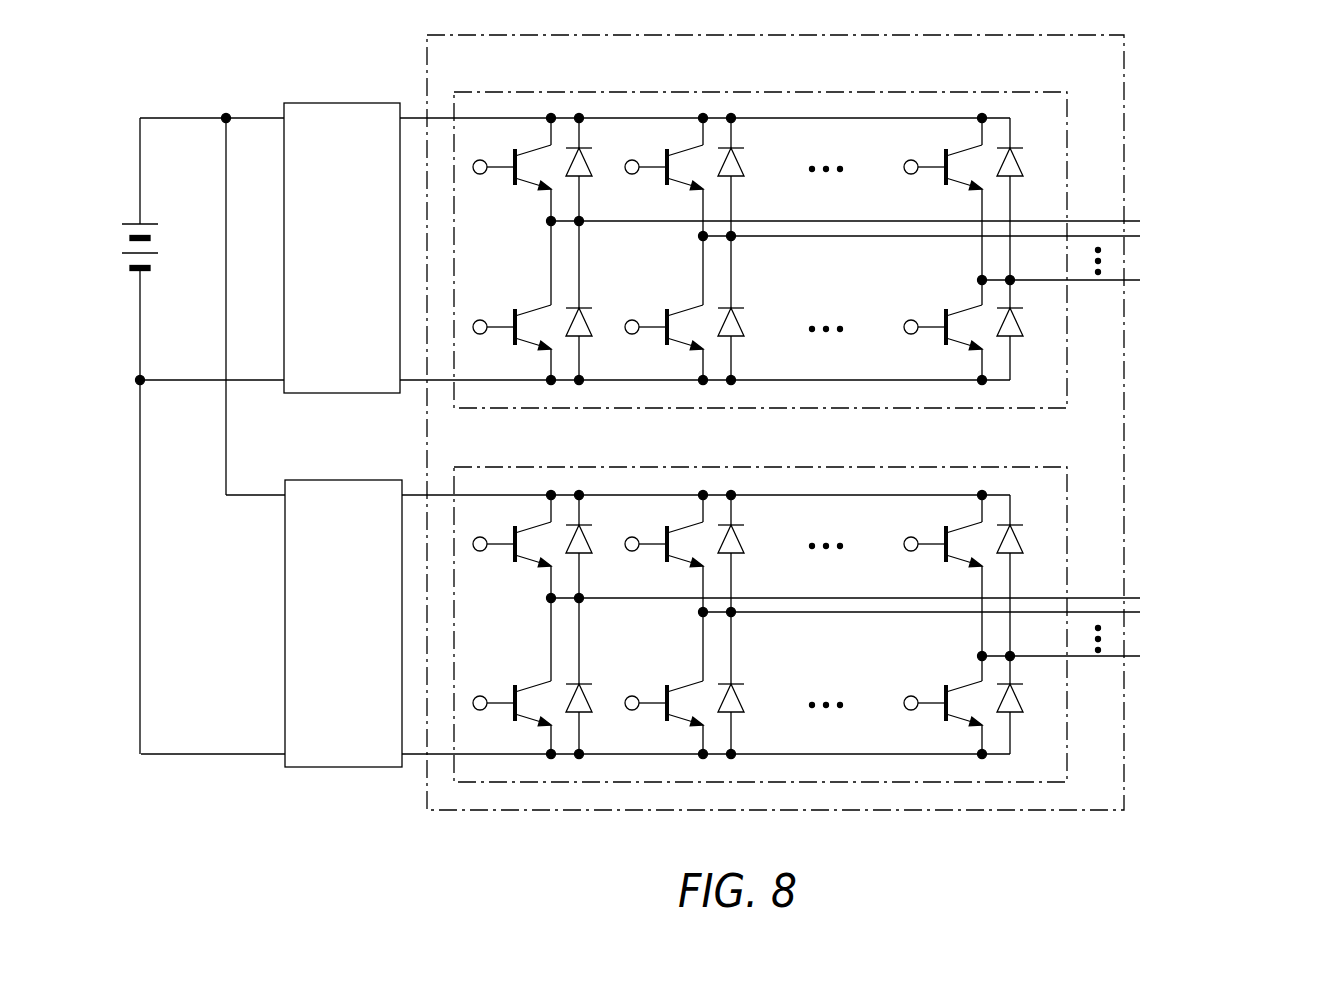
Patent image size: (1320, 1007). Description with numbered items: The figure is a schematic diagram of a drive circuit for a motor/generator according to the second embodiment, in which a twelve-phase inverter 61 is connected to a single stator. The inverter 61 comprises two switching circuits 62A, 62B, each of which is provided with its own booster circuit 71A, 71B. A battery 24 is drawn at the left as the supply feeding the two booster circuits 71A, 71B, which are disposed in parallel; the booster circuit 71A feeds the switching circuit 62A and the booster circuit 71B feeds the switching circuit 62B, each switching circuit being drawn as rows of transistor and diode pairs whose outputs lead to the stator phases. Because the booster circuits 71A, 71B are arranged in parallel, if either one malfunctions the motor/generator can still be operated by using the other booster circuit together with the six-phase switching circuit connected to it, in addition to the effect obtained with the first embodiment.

The battery 24 is at (122, 242).
The inverter 61 is at (1102, 80).
The switching circuit 62A is at (938, 106).
The switching circuit 62B is at (938, 482).
The booster circuit 71A is at (325, 118).
The booster circuit 71B is at (328, 495).